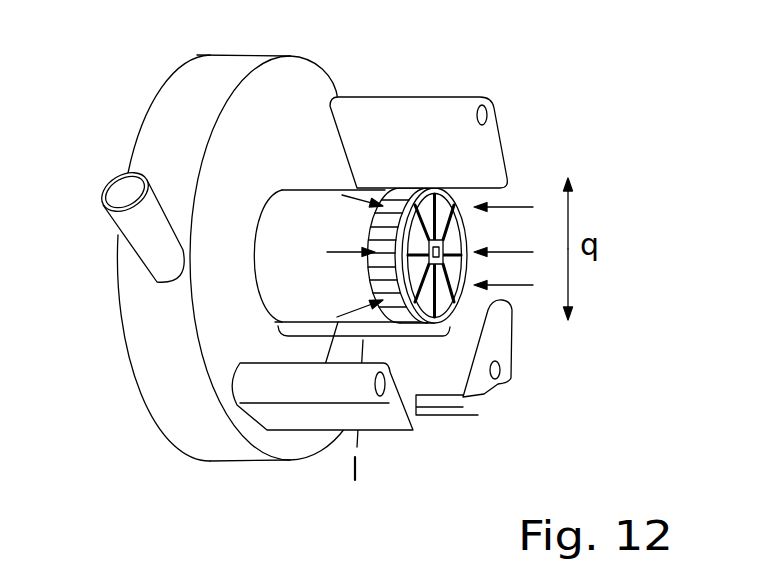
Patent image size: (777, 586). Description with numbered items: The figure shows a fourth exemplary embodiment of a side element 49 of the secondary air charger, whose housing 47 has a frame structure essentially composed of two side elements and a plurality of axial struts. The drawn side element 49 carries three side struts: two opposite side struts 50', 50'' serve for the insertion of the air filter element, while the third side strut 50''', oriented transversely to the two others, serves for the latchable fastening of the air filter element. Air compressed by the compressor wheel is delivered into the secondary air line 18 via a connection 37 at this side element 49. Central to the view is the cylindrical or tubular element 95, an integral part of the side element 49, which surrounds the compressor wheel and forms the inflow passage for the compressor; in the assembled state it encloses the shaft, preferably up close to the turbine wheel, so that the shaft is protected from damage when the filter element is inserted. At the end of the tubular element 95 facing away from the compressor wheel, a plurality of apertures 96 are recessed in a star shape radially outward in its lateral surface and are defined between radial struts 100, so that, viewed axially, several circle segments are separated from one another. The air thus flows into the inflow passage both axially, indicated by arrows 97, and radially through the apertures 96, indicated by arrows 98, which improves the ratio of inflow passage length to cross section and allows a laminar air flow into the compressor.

The secondary air line 18 is at (108, 247).
The connection 37 is at (145, 238).
The housing 47 is at (199, 258).
The second side element 49 is at (170, 395).
The side strut 50' is at (322, 451).
The side strut 50'' is at (418, 105).
The third side strut 50''' is at (511, 375).
The tubular element 95 is at (288, 248).
The aperture 96 is at (484, 334).
The arrows 97 is at (525, 205).
The arrows 98 is at (342, 195).
The radial struts 100 is at (424, 275).